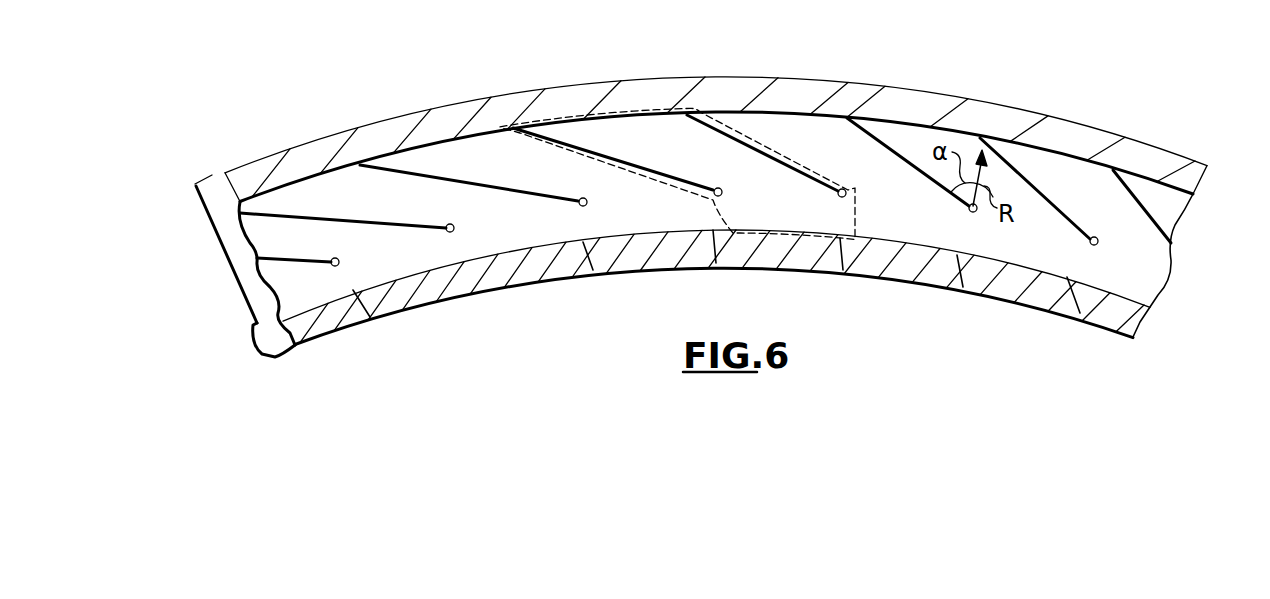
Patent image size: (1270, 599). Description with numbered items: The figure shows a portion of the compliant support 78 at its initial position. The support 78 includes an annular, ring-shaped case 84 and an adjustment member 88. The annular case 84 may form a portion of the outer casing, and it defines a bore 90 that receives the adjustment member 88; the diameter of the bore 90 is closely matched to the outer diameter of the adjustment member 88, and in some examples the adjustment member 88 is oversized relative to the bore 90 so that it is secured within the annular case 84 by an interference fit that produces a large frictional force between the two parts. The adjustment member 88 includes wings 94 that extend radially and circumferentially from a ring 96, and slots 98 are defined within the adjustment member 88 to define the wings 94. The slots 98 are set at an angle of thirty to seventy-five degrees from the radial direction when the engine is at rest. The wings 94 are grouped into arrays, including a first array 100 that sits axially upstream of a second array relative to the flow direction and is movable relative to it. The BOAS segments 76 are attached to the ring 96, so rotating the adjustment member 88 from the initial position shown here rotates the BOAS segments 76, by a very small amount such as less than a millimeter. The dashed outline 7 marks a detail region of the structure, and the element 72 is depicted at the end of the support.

The annular case 84 is at (632, 82).
The adjustment member 88 is at (743, 123).
The bore 90 is at (440, 150).
The wings 94 is at (555, 172).
The slots 98 is at (900, 150).
The detail section outline 7 is at (810, 167).
The ring 96 is at (643, 207).
The BOAS segments 76 is at (340, 333).
The support 78 is at (222, 254).
The foot 72 is at (255, 345).
The first array 100 is at (1173, 205).